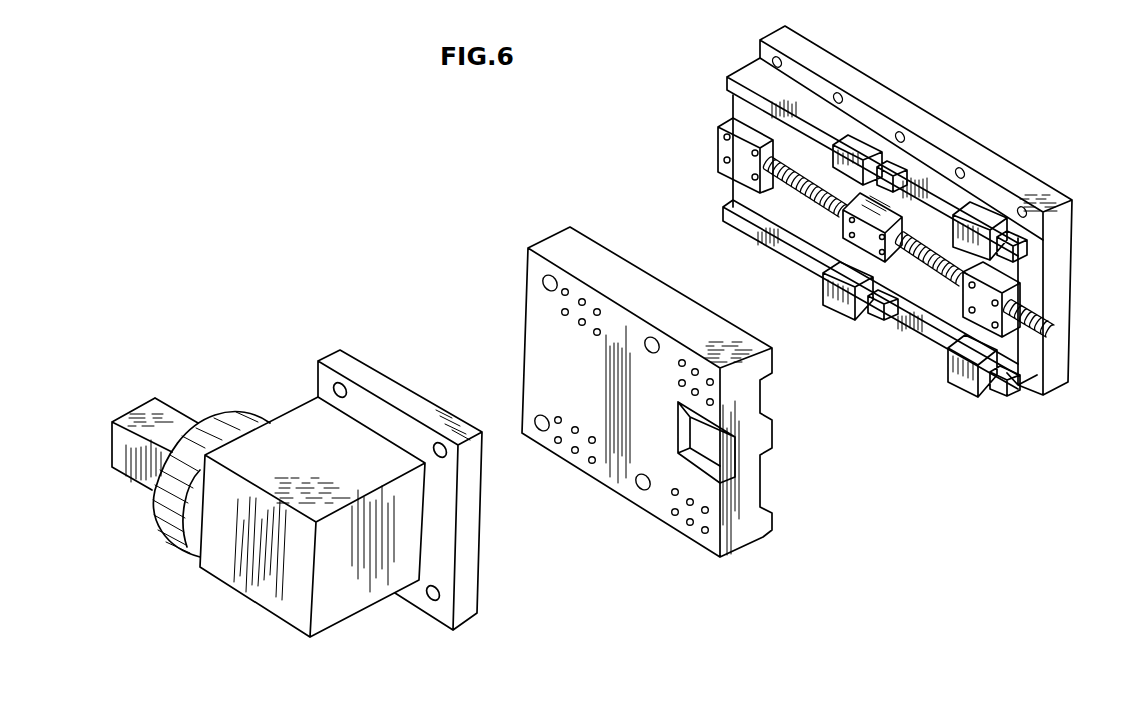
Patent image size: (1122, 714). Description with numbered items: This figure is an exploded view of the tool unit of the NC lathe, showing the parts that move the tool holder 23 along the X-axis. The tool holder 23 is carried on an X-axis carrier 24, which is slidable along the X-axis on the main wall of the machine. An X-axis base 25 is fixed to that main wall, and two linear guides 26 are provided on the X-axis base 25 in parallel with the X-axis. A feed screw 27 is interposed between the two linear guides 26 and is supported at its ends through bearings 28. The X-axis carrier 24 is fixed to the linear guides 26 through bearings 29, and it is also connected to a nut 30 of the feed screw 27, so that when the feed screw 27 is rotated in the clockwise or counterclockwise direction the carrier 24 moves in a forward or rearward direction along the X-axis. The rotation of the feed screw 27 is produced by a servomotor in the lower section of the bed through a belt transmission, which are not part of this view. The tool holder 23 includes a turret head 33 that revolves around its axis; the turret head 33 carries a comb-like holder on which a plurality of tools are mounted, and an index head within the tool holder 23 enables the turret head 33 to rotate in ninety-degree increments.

The tool holder 23 is at (377, 580).
The X-axis carrier 24 is at (757, 447).
The X-axis base 25 is at (1053, 267).
The linear guides 26 is at (912, 325).
The feed screw 27 is at (807, 200).
The bearings 28 is at (1015, 338).
The bearings 29 is at (977, 382).
The nut 30 is at (855, 242).
The turret head 33 is at (143, 477).